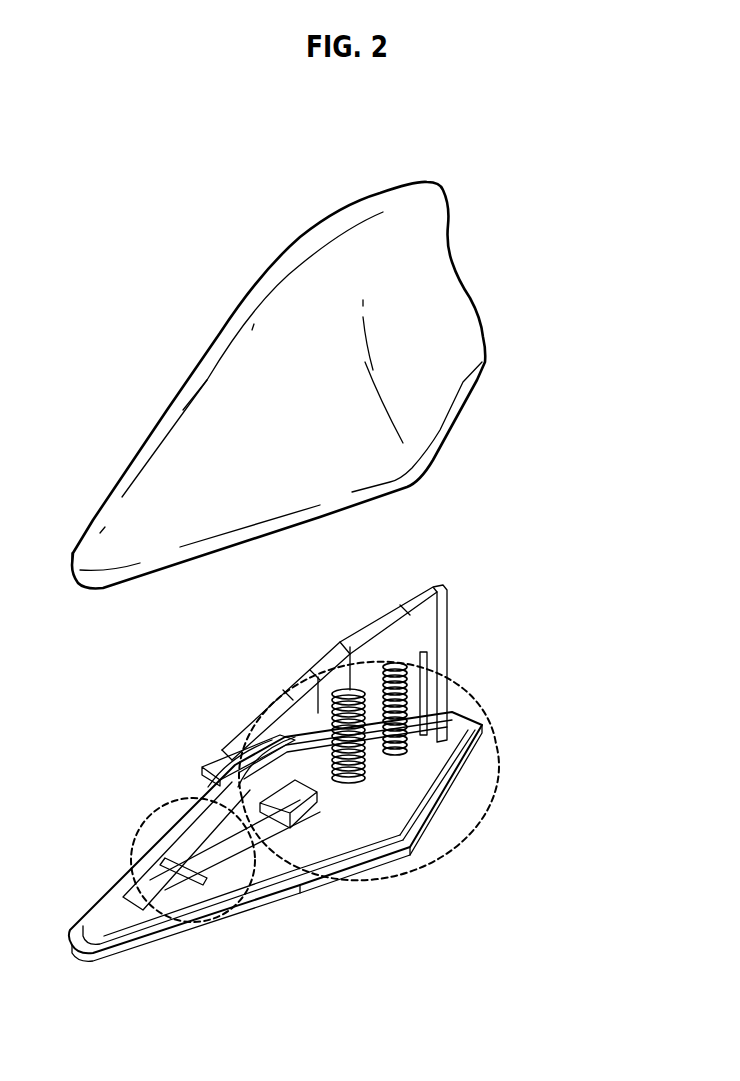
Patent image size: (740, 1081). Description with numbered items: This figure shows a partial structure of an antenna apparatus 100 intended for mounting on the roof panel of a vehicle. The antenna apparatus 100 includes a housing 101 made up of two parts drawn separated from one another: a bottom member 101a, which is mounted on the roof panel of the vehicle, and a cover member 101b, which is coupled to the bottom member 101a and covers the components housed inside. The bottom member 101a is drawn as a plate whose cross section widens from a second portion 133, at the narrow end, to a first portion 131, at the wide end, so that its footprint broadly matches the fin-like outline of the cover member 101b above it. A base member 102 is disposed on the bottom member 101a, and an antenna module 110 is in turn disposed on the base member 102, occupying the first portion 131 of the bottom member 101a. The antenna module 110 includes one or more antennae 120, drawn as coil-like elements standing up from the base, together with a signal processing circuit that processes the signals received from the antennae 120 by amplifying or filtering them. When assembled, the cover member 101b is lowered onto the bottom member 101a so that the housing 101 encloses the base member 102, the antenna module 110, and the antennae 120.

The antenna apparatus 100 is at (131, 313).
The housing 101 is at (593, 794).
The bottom member 101a is at (447, 784).
The cover member 101b is at (483, 325).
The base member 102 is at (378, 840).
The antenna module 110 is at (322, 835).
The antennae 120 is at (360, 708).
The first portion 131 is at (458, 825).
The second portion 133 is at (143, 818).